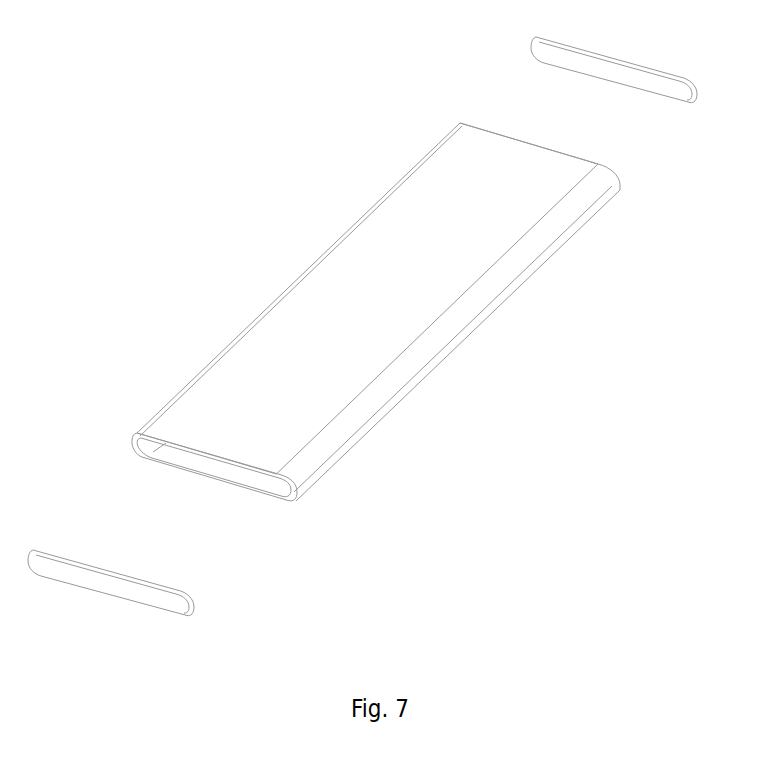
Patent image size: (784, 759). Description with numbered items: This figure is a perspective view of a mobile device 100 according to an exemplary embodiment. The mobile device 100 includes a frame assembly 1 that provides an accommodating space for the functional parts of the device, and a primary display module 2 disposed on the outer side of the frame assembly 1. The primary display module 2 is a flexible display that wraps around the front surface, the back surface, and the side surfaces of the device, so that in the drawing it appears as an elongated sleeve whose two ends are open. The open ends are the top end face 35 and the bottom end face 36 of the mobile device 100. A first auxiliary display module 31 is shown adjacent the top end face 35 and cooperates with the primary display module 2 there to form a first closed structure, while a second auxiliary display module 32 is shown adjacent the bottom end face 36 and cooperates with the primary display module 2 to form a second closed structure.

The mobile device 100 is at (262, 243).
The frame assembly 1 is at (247, 510).
The primary display module 2 is at (393, 292).
The top end face 35 is at (497, 136).
The bottom end face 36 is at (175, 452).
The first auxiliary display module 31 is at (650, 90).
The second auxiliary display module 32 is at (120, 590).